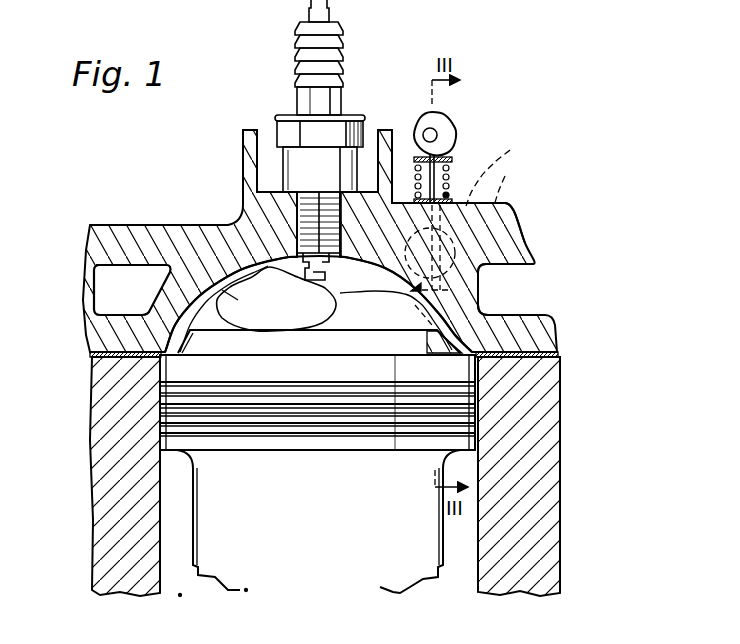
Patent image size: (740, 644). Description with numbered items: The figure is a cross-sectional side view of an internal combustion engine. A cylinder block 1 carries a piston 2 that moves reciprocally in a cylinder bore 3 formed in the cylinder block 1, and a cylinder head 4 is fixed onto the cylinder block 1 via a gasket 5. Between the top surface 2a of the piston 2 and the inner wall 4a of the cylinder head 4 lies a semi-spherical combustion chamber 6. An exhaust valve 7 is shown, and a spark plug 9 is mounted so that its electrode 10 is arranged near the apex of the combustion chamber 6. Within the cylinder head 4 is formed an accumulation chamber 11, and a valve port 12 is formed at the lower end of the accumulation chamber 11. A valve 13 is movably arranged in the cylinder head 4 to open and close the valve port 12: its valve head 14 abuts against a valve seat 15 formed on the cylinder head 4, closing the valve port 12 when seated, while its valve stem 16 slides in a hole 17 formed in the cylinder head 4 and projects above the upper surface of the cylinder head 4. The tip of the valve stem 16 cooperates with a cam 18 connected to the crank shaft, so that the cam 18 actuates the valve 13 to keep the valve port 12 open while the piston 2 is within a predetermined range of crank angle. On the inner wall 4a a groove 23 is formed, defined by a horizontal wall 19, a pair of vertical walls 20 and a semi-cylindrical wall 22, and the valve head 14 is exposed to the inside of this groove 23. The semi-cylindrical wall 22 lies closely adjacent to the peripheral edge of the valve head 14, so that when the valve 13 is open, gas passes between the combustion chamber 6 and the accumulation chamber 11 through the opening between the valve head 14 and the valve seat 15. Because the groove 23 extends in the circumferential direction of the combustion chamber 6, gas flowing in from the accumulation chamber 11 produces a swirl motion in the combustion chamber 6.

The cylinder block 1 is at (504, 580).
The piston 2 is at (386, 580).
The top surface of the piston 2a is at (322, 327).
The cylinder bore 3 is at (470, 540).
The cylinder head 4 is at (214, 235).
The inner wall of the cylinder head 4a is at (385, 130).
The gasket 5 is at (556, 354).
The combustion chamber 6 is at (359, 324).
The exhaust valve 7 is at (217, 293).
The spark plug 9 is at (300, 99).
The electrode of the spark plug 10 is at (240, 215).
The accumulation chamber 11 is at (508, 182).
The valve port 12 is at (490, 273).
The valve 13 is at (517, 229).
The valve head 14 is at (467, 338).
The valve seat 15 is at (488, 293).
The valve stem 16 is at (450, 175).
The hole 17 is at (496, 169).
The cam 18 is at (447, 126).
The horizontal wall 19 is at (383, 267).
The vertical wall 20 is at (404, 293).
The semi-cylindrical wall 22 is at (490, 308).
The groove 23 is at (427, 310).